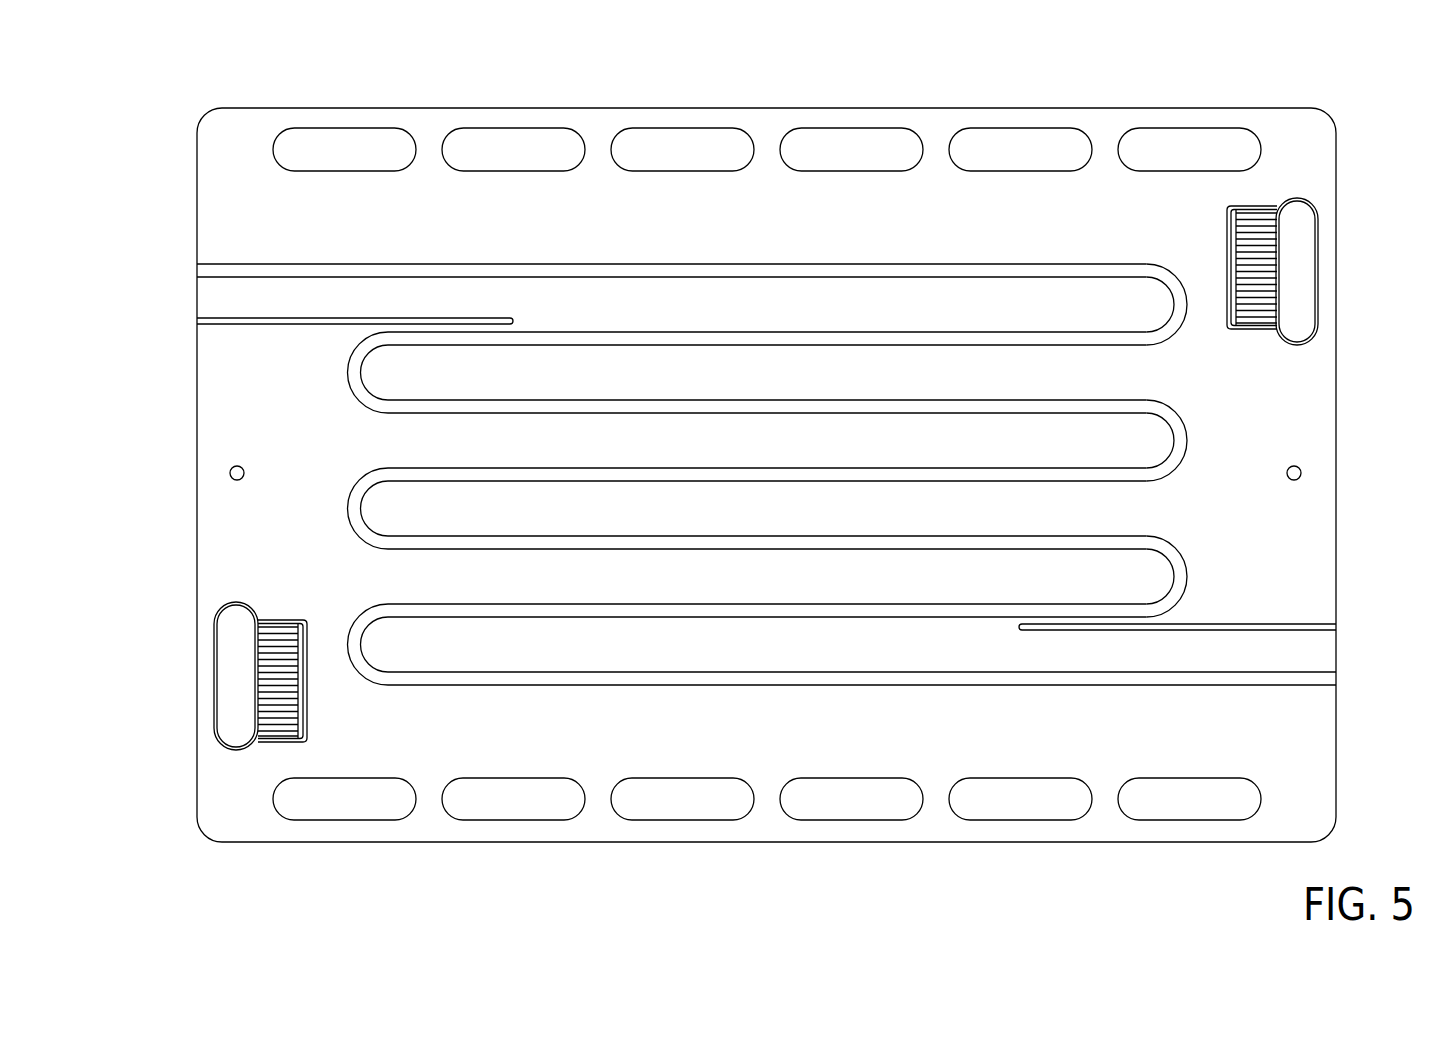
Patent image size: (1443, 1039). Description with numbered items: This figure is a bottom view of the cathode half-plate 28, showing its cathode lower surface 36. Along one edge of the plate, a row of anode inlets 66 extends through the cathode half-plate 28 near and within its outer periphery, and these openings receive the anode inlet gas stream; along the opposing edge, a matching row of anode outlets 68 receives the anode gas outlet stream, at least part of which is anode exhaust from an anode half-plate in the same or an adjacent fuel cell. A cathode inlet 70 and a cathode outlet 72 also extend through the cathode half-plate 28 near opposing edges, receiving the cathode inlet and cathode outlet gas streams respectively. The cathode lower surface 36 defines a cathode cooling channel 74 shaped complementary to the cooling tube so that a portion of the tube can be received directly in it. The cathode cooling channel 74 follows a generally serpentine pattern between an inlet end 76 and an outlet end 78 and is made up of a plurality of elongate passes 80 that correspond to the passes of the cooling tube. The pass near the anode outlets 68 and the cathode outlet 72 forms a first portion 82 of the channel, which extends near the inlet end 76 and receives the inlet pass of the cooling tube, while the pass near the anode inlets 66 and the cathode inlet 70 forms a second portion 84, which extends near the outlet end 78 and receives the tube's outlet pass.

The cathode half-plate 28 is at (143, 88).
The cathode lower surface 36 is at (1308, 394).
The anode inlets 66 is at (687, 150).
The anode outlets 68 is at (501, 799).
The cathode inlet 70 is at (1293, 280).
The cathode outlet 72 is at (236, 687).
The cathode cooling channel 74 is at (766, 477).
The inlet end 76 is at (1338, 677).
The outlet end 78 is at (197, 270).
The elongate passes 80 is at (1115, 473).
The first portion 82 is at (748, 678).
The second portion 84 is at (918, 270).